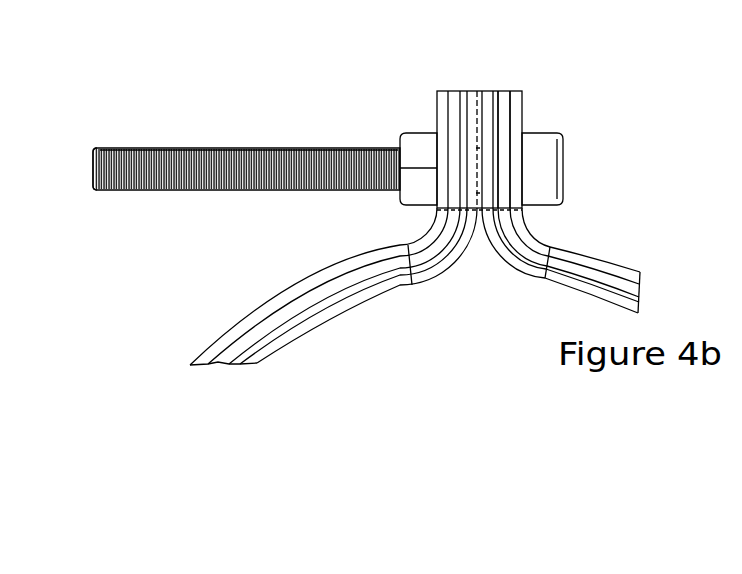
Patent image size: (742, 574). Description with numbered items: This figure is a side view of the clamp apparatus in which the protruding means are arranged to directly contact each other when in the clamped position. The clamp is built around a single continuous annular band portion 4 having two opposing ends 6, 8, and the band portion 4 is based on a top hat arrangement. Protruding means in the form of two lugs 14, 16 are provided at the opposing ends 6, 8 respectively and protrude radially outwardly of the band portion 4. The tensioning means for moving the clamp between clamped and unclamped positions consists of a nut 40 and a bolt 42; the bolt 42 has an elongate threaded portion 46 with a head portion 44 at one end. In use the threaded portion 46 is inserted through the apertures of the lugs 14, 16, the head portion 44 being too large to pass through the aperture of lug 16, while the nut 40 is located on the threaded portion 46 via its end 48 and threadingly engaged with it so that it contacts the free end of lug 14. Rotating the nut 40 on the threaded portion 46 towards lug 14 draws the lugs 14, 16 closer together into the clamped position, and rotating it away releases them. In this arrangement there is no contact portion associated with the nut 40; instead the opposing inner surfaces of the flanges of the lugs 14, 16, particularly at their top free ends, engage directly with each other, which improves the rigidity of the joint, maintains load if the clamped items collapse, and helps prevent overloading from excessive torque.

The band portion 4 is at (396, 289).
The end of band portion 6 is at (460, 274).
The end of band portion 8 is at (500, 274).
The lug 14 is at (451, 87).
The lug 16 is at (504, 86).
The nut 40 is at (425, 150).
The bolt 42 is at (278, 146).
The head portion 44 is at (547, 162).
The threaded portion 46 is at (193, 154).
The end of threaded portion 48 is at (101, 146).